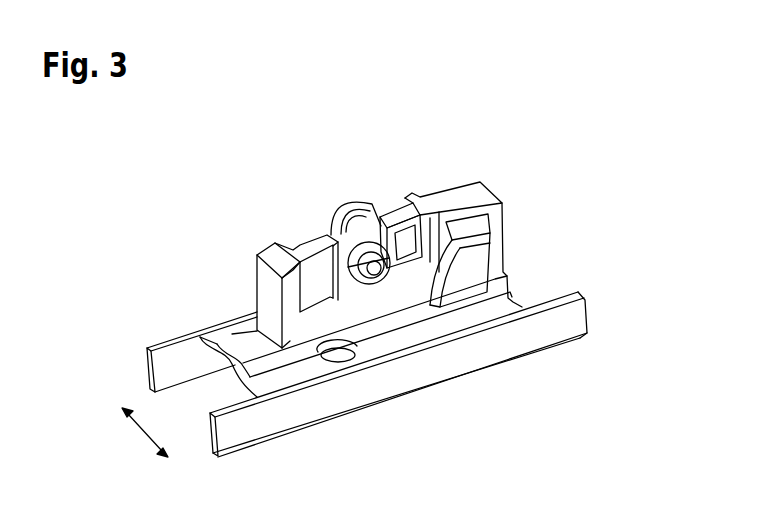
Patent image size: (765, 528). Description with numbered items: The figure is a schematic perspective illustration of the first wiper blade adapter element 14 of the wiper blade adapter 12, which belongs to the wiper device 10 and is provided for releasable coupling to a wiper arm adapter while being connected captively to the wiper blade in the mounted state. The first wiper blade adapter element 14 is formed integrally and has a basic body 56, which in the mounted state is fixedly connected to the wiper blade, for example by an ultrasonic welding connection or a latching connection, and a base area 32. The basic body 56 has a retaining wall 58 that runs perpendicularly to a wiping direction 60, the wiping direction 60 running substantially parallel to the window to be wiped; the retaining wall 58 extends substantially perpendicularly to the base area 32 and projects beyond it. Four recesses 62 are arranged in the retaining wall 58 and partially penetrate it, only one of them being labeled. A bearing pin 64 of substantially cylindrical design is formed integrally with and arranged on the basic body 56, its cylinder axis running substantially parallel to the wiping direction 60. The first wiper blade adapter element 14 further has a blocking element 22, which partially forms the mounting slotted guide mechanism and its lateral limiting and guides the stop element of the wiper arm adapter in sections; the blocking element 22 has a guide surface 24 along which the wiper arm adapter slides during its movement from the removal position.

The wiper device 10 is at (168, 176).
The wiper blade adapter 12 is at (598, 172).
The first wiper blade adapter element 14 is at (516, 184).
The blocking element 22 is at (478, 262).
The guide surface 24 is at (480, 228).
The base area 32 is at (292, 372).
The basic body 56 is at (472, 353).
The retaining wall 58 is at (315, 318).
The wiping direction 60 is at (142, 435).
The recesses 62 is at (366, 282).
The bearing pin 64 is at (378, 228).